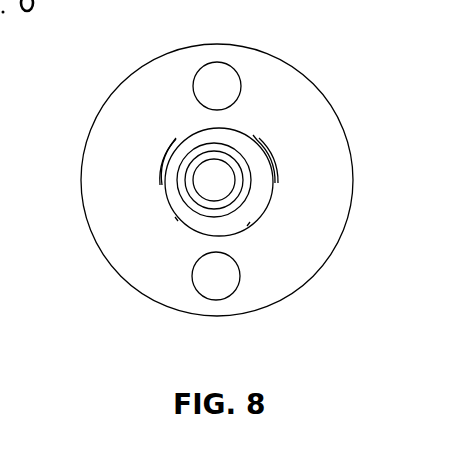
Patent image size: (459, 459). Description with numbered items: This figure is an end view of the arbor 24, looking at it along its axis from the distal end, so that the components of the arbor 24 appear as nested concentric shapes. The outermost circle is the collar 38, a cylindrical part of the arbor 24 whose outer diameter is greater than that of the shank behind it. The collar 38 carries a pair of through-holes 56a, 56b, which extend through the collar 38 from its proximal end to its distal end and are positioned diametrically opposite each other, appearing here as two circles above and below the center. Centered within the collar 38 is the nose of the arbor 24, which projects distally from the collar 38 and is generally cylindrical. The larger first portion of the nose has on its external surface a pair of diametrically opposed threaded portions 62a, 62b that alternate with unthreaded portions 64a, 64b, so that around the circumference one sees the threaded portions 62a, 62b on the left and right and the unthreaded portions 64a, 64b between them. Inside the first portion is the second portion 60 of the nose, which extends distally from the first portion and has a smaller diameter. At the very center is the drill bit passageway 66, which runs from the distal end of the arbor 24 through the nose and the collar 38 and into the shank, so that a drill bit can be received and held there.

The arbor 24 is at (258, 27).
The collar 38 is at (315, 126).
The through-hole 56a is at (242, 87).
The through-hole 56b is at (238, 282).
The second portion 60 is at (176, 212).
The threaded portion 62a is at (163, 192).
The threaded portion 62b is at (273, 193).
The unthreaded portion 64a is at (252, 136).
The unthreaded portion 64b is at (229, 234).
The drill bit passageway 66 is at (217, 178).